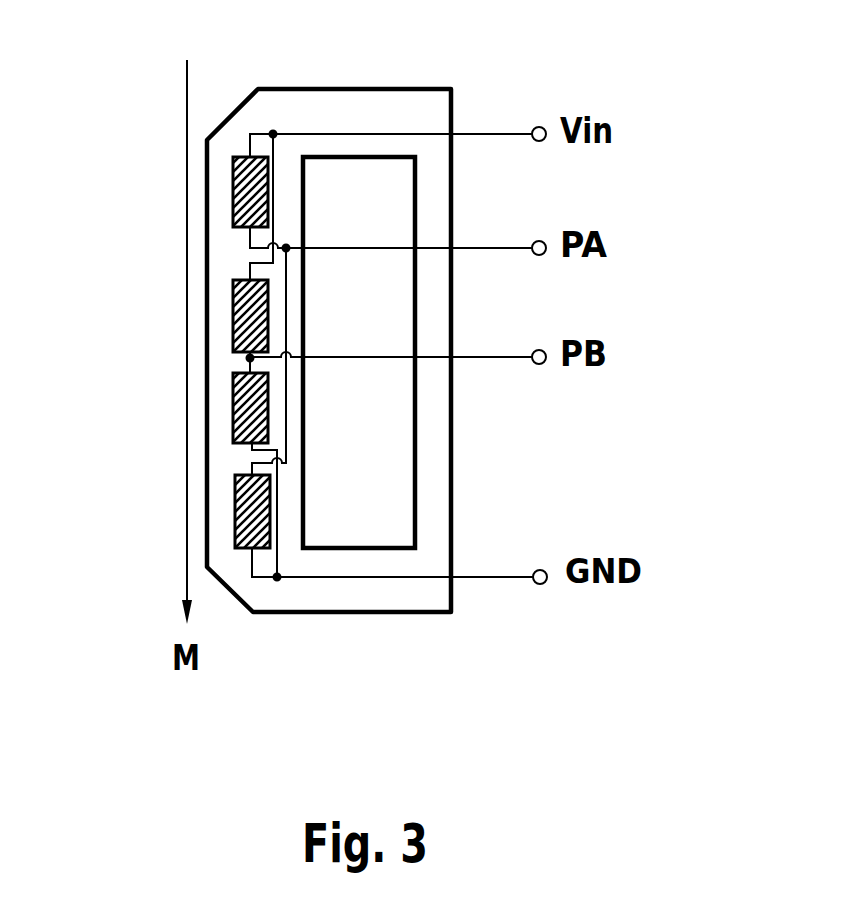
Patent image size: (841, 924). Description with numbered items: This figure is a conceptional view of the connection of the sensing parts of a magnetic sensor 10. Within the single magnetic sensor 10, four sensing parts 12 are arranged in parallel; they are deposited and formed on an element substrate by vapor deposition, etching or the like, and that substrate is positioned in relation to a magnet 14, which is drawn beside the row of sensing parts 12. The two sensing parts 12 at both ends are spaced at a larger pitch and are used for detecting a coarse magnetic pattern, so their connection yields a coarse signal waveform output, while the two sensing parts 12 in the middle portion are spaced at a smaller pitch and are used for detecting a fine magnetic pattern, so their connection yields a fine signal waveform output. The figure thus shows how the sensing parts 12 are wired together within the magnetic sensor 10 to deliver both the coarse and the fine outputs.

The magnetic sensor 10 is at (460, 76).
The sensing parts 12 is at (233, 195).
The magnet 14 is at (418, 208).